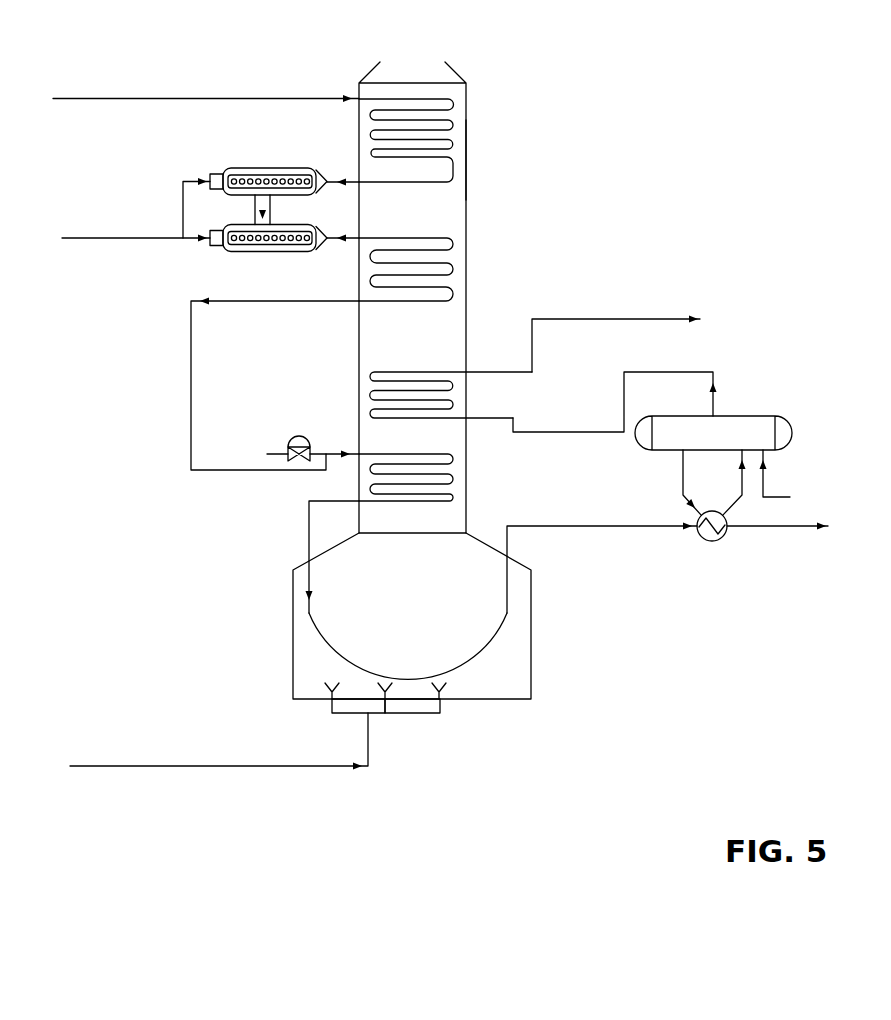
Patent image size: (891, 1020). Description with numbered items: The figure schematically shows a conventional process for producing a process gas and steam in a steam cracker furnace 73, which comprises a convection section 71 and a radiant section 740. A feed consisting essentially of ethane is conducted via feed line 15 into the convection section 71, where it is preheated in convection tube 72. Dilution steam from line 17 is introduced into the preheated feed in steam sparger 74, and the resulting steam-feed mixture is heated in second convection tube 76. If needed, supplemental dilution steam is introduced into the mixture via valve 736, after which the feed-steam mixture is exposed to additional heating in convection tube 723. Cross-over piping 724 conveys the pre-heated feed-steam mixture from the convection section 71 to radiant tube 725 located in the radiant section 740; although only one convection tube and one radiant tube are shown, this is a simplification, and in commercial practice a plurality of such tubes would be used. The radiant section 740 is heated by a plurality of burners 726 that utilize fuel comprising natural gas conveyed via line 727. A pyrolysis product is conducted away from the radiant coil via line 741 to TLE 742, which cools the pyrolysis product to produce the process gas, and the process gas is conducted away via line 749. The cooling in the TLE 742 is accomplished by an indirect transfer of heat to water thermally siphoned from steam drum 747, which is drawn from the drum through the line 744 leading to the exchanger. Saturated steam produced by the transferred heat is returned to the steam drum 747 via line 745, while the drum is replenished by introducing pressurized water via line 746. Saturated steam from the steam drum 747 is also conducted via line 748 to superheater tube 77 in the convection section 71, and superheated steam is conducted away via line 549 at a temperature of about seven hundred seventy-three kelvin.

The feed line 15 is at (132, 98).
The dilution steam line 17 is at (130, 238).
The convection section 71 is at (455, 206).
The convection tube 72 is at (472, 118).
The steam cracker furnace 73 is at (468, 157).
The steam sparger 74 is at (284, 168).
The second convection tube 76 is at (470, 261).
The superheater tube 77 is at (458, 404).
The superheated steam line 549 is at (655, 318).
The convection tube 723 is at (470, 492).
The cross-over piping 724 is at (309, 537).
The radiant tube 725 is at (338, 650).
The burners 726 is at (420, 713).
The fuel line 727 is at (268, 766).
The valve 736 is at (297, 434).
The radiant section 740 is at (531, 645).
The pyrolysis product line 741 is at (567, 526).
The TLE 742 is at (712, 541).
The vessel outlet line 744 is at (683, 487).
The saturated steam return line 745 is at (741, 486).
The pressurized water line 746 is at (779, 497).
The steam drum 747 is at (765, 416).
The saturated steam line 748 is at (715, 402).
The process gas line 749 is at (777, 528).